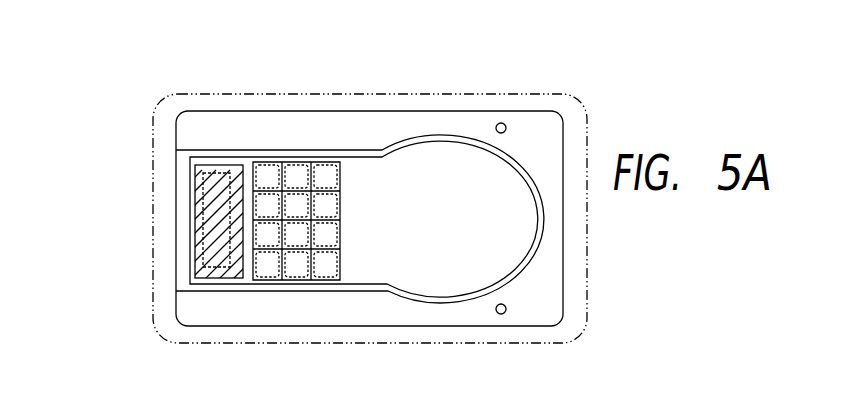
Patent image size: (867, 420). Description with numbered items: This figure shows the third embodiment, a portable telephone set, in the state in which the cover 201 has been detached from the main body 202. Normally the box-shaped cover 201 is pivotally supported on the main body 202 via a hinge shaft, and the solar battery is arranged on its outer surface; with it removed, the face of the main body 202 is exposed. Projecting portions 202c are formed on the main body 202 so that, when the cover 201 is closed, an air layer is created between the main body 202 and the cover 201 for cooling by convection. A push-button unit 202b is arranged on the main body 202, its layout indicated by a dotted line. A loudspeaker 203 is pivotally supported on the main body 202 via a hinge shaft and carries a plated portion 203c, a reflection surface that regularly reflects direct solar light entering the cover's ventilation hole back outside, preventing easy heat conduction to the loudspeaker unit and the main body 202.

The cover 201 is at (583, 337).
The main body 202 is at (542, 120).
The push-button unit 202b is at (296, 193).
The projecting portions 202c is at (502, 123).
The loudspeaker 203 is at (522, 242).
The plated portion 203c is at (194, 277).